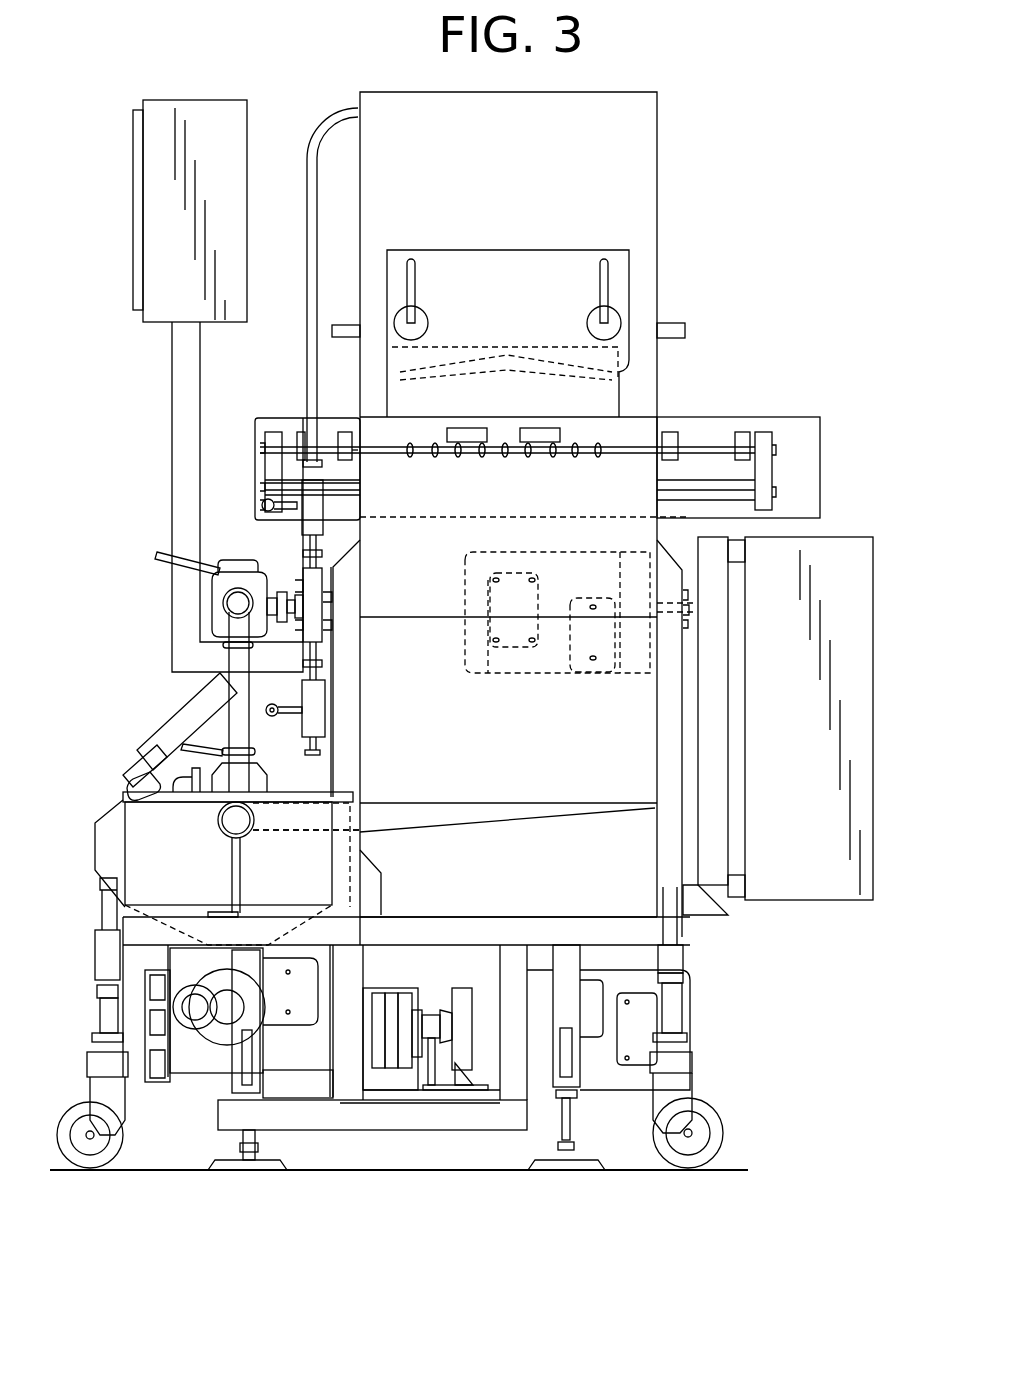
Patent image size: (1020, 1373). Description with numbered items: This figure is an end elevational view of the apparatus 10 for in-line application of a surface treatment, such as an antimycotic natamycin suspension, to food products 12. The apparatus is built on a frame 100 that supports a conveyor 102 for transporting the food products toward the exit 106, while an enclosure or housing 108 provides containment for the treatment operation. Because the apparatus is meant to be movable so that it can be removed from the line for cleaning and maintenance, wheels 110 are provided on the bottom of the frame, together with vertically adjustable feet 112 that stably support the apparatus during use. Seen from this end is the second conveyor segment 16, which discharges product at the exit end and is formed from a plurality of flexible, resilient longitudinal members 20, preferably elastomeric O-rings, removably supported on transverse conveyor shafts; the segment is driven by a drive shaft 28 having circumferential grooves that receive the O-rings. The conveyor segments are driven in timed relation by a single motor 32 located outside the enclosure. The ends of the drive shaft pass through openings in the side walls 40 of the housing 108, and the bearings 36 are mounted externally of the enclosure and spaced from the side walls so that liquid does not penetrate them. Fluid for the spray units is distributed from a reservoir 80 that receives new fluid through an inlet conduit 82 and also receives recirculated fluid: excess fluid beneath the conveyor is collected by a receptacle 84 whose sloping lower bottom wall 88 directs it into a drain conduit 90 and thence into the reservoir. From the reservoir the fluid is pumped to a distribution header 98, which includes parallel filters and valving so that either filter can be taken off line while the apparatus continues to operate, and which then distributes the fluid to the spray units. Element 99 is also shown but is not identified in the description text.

The apparatus 10 is at (718, 1035).
The food products 12 is at (548, 423).
The second conveyor segment 16 is at (487, 457).
The longitudinal members 20 is at (574, 457).
The drive shaft 28 is at (617, 454).
The motor 32 is at (542, 657).
The bearings 36 is at (343, 425).
The side walls 40 is at (340, 500).
The reservoir 80 is at (187, 842).
The inlet conduit 82 is at (226, 838).
The receptacle 84 is at (478, 784).
The lower bottom wall 88 is at (416, 742).
The drain conduit 90 is at (432, 815).
The distribution header 98 is at (313, 588).
The spray gun 99 is at (180, 723).
The frame 100 is at (553, 942).
The conveyor 102 is at (398, 458).
The exit 106 is at (503, 498).
The housing 108 is at (571, 177).
The wheels 110 is at (128, 1150).
The vertically adjustable feet 112 is at (530, 1142).